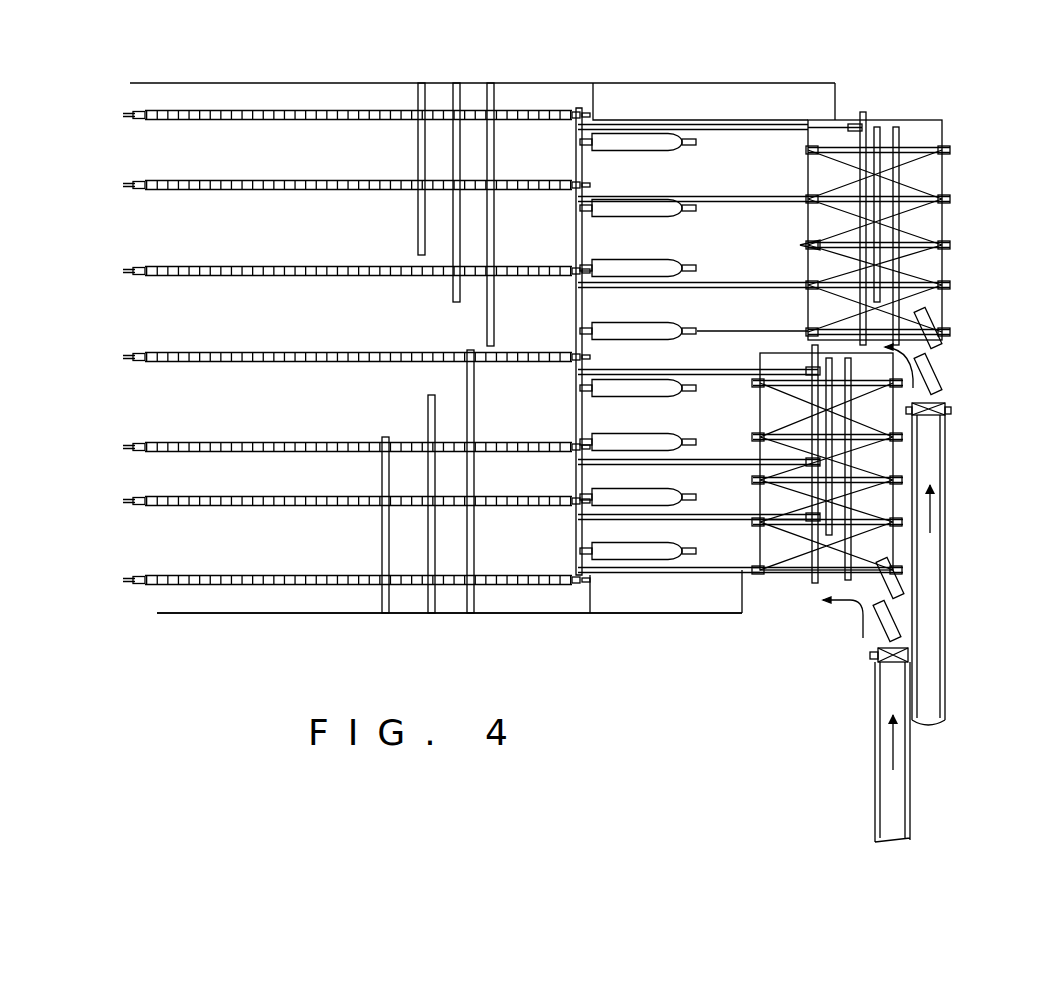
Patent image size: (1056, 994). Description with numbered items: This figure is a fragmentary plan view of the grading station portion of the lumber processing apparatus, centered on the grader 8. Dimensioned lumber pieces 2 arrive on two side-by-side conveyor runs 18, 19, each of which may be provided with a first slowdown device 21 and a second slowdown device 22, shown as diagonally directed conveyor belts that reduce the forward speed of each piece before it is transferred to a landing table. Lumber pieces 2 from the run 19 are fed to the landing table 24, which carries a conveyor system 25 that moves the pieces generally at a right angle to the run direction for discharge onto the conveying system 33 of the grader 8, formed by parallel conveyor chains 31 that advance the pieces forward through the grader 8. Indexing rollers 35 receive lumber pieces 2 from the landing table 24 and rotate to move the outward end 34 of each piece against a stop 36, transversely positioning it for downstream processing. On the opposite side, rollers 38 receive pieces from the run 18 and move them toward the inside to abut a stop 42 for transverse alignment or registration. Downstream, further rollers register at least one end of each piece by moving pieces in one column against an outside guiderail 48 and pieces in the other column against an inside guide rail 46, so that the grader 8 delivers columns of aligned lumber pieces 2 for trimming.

The outside guiderail 48 is at (318, 83).
The inside guide rail 46 is at (282, 614).
The conveyor chains 31 is at (305, 120).
The lumber pieces 2 is at (494, 288).
The grader 8 is at (378, 628).
The stop 36 is at (640, 88).
The indexing rollers 35 is at (658, 203).
The rollers 38 is at (645, 397).
The conveying system 33 is at (790, 72).
The outward end 34 is at (877, 125).
The conveyor system 25 is at (932, 148).
The landing table 24 is at (943, 278).
The second slowdown device 22 is at (937, 318).
The first slowdown device 21 is at (940, 370).
The conveyor run 19 is at (950, 552).
The conveyor run 18 is at (912, 827).
The stop 42 is at (673, 617).